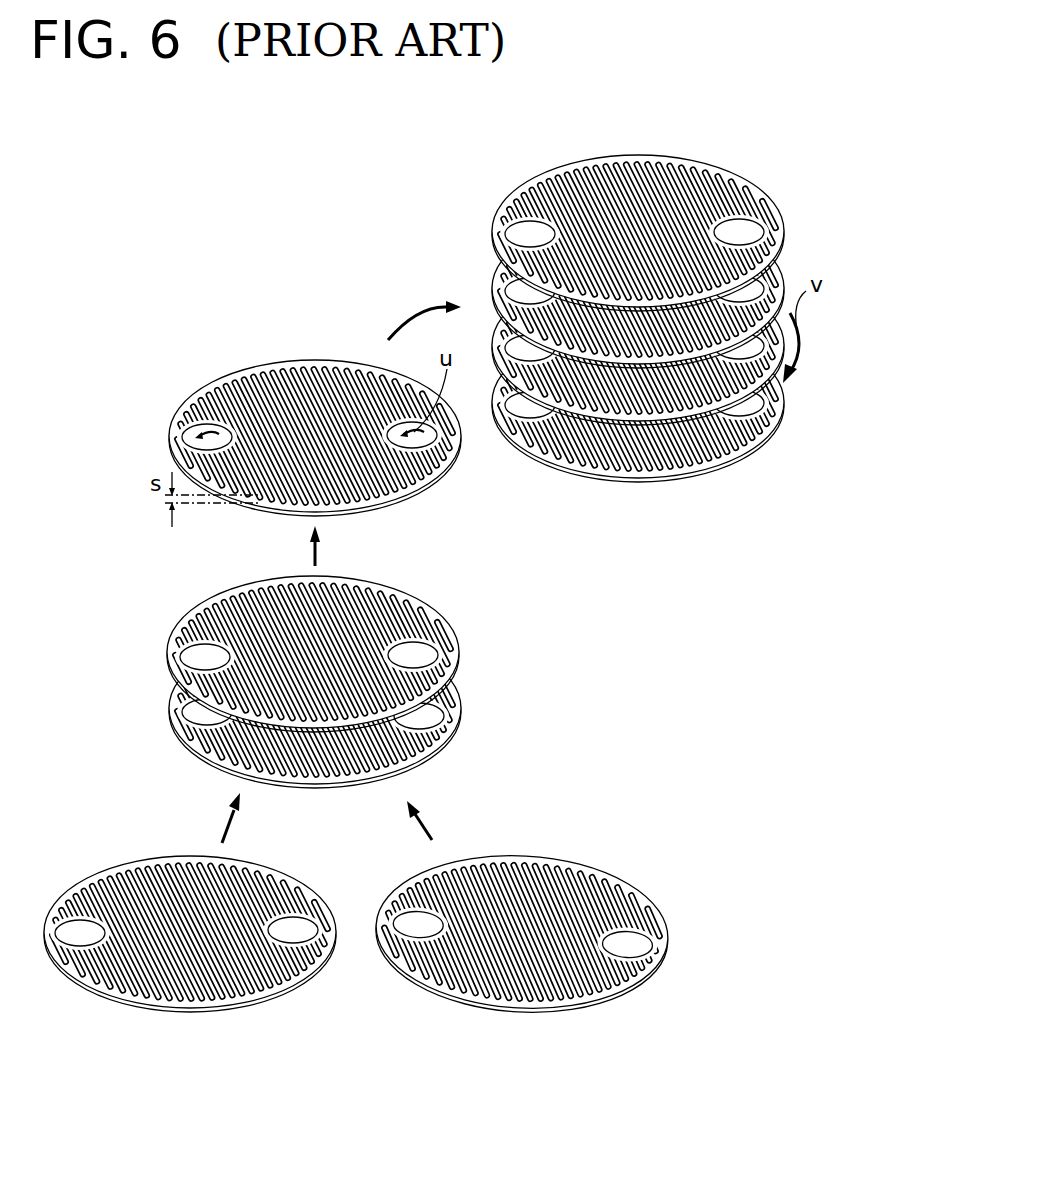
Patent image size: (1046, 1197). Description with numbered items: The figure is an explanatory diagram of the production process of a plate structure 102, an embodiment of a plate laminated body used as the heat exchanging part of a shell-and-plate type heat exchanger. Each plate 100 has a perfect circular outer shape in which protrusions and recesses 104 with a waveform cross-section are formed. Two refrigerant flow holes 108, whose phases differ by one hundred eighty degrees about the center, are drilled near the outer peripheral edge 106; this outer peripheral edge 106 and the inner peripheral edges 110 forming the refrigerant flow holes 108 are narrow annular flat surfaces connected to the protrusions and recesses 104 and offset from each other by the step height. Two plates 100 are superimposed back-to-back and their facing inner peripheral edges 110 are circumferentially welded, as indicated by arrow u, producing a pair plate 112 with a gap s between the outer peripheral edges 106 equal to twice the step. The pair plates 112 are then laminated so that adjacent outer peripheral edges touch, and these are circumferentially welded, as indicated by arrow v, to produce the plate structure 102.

The plate 100 is at (357, 828).
The plate structure 102 is at (815, 177).
The protrusions and recesses 104 is at (189, 897).
The outer peripheral edge 106 is at (190, 968).
The refrigerant flow hole 108 is at (75, 928).
The inner peripheral edge 110 is at (188, 430).
The pair plate 112 is at (498, 334).